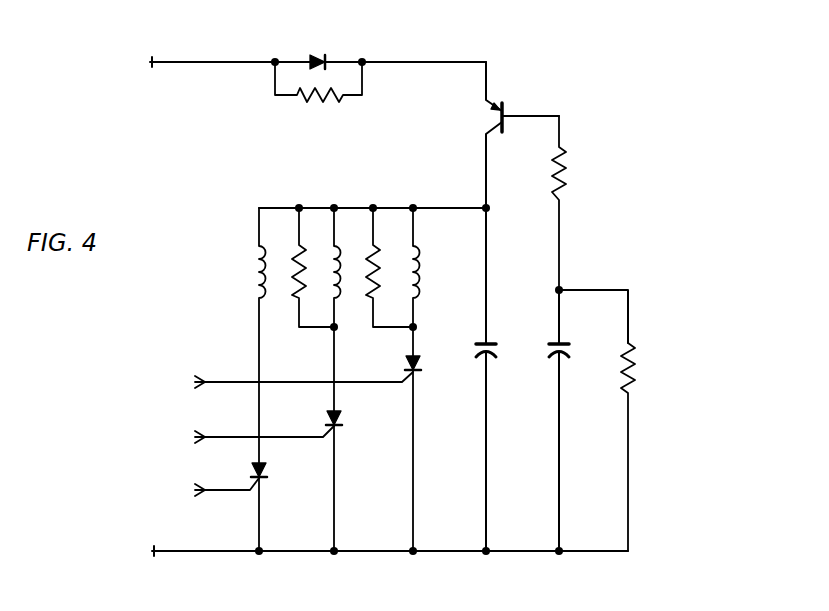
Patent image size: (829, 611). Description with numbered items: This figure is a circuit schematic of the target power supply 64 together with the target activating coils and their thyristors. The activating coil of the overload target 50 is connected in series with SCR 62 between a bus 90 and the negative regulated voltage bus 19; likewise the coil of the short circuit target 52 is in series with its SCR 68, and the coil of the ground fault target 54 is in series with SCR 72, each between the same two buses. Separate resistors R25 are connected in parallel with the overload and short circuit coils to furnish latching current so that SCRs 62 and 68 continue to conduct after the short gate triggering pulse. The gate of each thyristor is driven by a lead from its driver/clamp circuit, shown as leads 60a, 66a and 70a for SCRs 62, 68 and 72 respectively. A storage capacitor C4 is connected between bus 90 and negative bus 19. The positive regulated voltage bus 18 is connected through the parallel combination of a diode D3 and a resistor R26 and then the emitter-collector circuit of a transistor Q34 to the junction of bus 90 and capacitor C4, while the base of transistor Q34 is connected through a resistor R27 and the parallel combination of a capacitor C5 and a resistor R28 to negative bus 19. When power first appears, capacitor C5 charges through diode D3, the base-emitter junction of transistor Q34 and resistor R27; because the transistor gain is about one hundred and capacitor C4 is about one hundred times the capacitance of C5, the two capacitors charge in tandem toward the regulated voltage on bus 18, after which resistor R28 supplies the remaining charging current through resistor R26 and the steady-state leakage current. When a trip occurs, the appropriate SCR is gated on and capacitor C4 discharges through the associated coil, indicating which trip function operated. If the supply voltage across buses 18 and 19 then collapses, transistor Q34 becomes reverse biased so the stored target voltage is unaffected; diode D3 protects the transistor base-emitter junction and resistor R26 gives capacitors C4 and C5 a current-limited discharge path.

The positive regulated voltage bus 18 is at (176, 63).
The negative regulated voltage bus 19 is at (178, 553).
The diode D3 is at (326, 57).
The resistor R26 is at (318, 95).
The transistor Q34 is at (500, 117).
The resistor R27 is at (563, 179).
The bus 90 is at (448, 208).
The ground fault target 54 is at (252, 273).
The short circuit target 52 is at (342, 262).
The overload target 50 is at (420, 265).
The resistors R25 is at (296, 292).
The storage capacitor C4 is at (478, 350).
The capacitor C5 is at (563, 350).
The target power supply 64 is at (578, 278).
The resistor R28 is at (633, 377).
The driver/clamp circuit output lead 60a is at (244, 379).
The SCR 62 is at (419, 372).
The driver/clamp circuit output lead 66a is at (248, 434).
The SCR 68 is at (341, 422).
The driver/clamp circuit output lead 70a is at (247, 486).
The SCR 72 is at (267, 476).